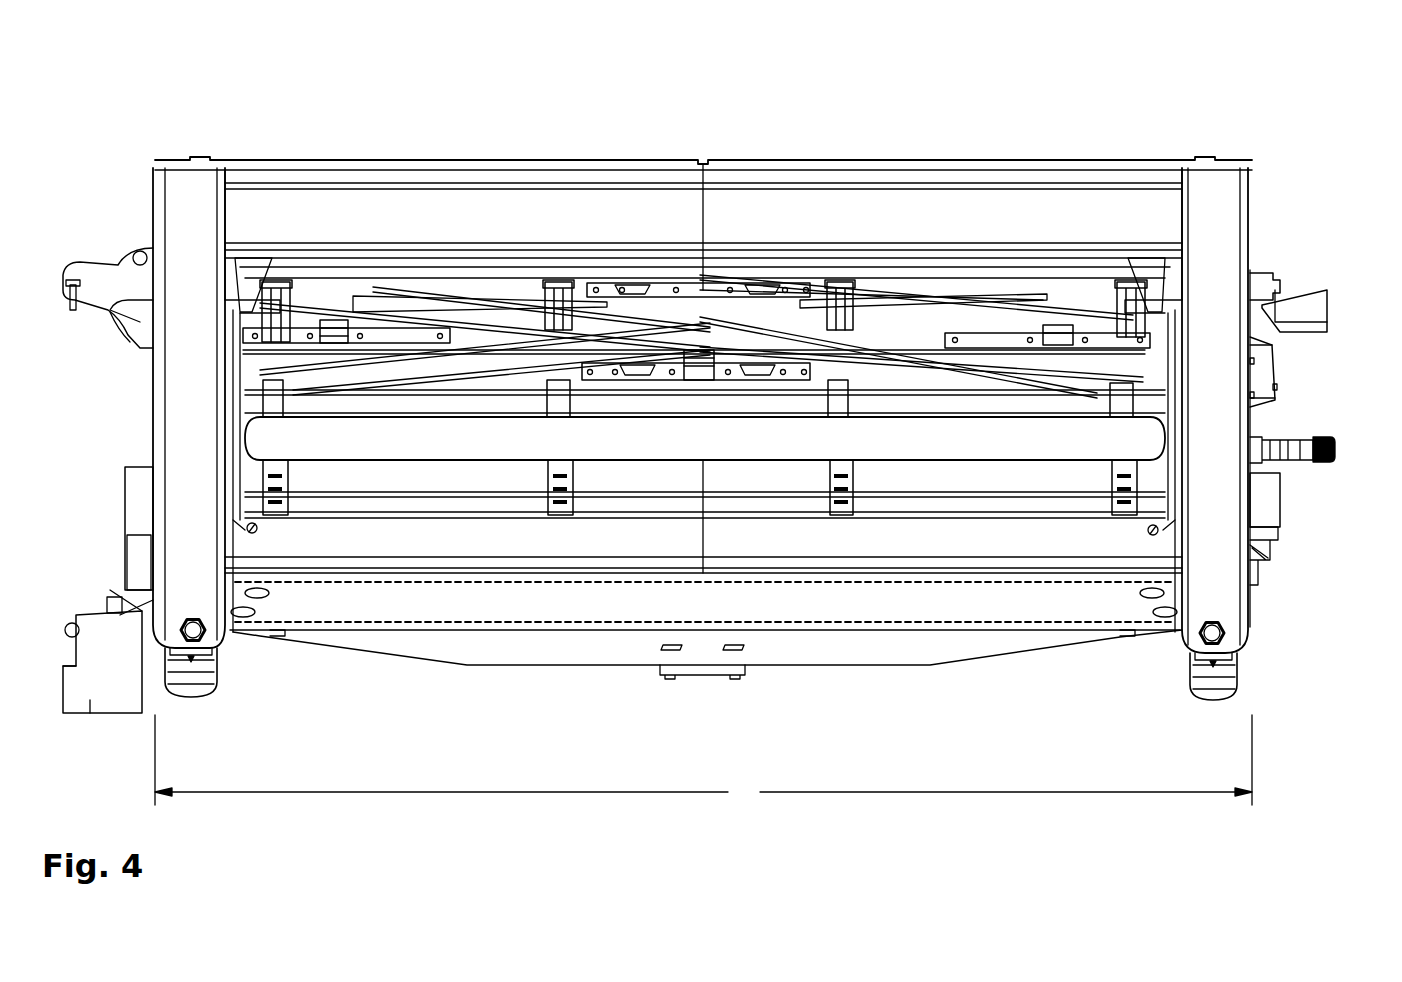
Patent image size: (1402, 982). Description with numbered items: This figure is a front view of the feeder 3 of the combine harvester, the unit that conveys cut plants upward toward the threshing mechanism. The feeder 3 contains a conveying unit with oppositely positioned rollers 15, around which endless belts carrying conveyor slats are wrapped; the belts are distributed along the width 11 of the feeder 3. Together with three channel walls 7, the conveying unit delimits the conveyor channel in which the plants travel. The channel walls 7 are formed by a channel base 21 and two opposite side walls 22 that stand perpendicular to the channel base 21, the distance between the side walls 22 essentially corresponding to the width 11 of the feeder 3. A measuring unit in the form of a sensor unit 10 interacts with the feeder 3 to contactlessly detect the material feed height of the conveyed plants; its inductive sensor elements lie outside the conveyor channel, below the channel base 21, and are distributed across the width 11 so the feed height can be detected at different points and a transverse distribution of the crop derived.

The feeder 3 is at (751, 132).
The channel walls 7 is at (706, 383).
The channel base 21 is at (417, 268).
The side walls 22 is at (183, 415).
The sensor unit 10 is at (340, 330).
The rollers 15 is at (1128, 442).
The width 11 is at (703, 762).